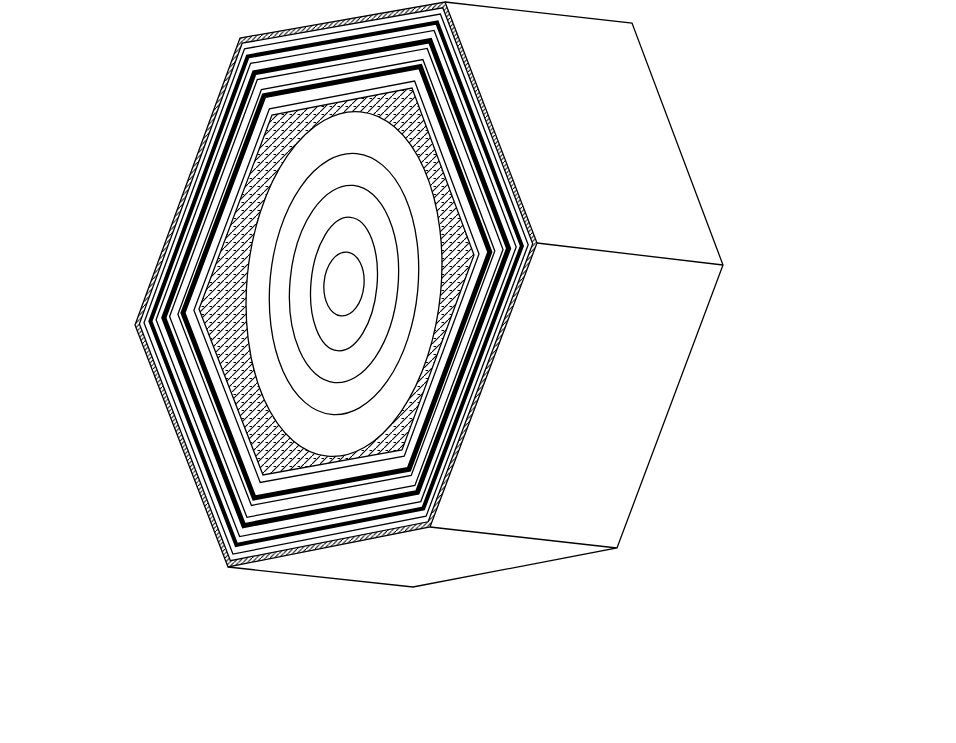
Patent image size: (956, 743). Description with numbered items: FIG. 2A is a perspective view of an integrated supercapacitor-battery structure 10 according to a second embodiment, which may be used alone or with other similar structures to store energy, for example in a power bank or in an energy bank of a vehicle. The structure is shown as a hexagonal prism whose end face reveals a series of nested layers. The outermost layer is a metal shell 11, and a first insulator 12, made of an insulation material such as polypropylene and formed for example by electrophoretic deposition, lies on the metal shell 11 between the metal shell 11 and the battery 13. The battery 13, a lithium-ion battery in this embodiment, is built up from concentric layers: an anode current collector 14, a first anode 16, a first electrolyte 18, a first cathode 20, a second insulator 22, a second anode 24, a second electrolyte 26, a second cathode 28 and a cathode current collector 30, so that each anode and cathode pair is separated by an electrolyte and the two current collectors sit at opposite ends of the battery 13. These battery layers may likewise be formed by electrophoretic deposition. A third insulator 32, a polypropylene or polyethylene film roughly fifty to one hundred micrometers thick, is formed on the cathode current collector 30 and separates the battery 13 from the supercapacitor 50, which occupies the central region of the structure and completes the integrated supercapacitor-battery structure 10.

The integrated supercapacitor-battery structure 10 is at (700, 63).
The metal shell 11 is at (210, 127).
The first insulator 12 is at (226, 568).
The battery 13 is at (163, 566).
The anode current collector 14 is at (229, 544).
The first anode 16 is at (224, 512).
The first electrolyte 18 is at (218, 482).
The first cathode 20 is at (215, 452).
The second insulator 22 is at (210, 422).
The second anode 24 is at (206, 388).
The second electrolyte 26 is at (198, 352).
The second cathode 28 is at (198, 298).
The cathode current collector 30 is at (214, 268).
The third insulator 32 is at (453, 232).
The supercapacitor 50 is at (377, 140).